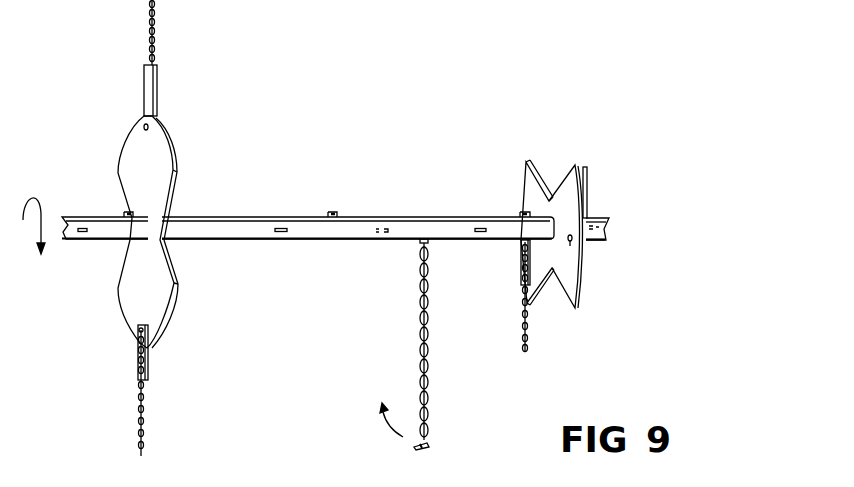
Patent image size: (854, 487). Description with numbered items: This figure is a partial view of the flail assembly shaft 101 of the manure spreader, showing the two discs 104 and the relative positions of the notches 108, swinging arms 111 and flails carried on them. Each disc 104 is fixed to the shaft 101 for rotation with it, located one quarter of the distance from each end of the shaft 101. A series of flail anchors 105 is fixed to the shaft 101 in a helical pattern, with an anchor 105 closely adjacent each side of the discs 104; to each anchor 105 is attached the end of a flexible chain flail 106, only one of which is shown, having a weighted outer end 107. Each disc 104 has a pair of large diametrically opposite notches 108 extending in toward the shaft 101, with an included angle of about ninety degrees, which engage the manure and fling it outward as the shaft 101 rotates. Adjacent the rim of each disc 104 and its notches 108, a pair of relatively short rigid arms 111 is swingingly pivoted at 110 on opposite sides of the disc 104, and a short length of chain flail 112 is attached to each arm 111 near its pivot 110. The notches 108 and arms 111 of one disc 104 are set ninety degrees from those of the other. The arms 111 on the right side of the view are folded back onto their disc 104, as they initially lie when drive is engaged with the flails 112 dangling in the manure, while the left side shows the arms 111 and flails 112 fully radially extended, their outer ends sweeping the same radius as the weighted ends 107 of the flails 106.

The shaft 101 is at (262, 216).
The disc 104 is at (177, 292).
The flail anchor 105 is at (128, 212).
The chain flail 106 is at (428, 368).
The weighted outer end 107 is at (428, 444).
The notch 108 is at (176, 178).
The pivot 110 is at (143, 127).
The rigid arm 111 is at (160, 91).
The chain flail 112 is at (155, 33).